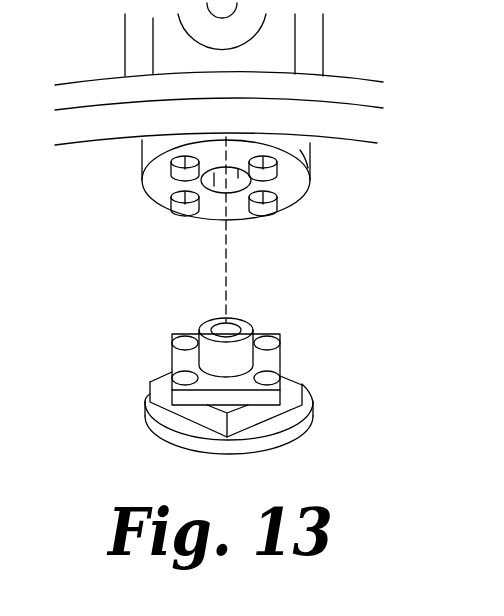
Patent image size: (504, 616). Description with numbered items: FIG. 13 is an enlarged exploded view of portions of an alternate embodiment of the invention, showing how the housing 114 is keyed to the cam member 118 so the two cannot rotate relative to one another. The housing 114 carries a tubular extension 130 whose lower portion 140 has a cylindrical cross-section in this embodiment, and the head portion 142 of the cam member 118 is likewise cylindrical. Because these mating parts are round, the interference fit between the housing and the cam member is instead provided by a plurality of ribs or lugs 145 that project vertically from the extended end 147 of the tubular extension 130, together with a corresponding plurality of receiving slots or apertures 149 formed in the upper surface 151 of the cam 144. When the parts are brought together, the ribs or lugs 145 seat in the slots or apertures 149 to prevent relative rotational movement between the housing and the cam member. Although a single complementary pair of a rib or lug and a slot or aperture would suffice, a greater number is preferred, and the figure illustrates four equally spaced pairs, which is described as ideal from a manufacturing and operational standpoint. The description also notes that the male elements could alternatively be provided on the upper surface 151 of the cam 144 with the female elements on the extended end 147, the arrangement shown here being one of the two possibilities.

The housing 114 is at (357, 92).
The tubular extension 130 is at (290, 186).
The lower portion 140 is at (226, 173).
The extended end 147 is at (298, 167).
The ribs or lugs 145 is at (180, 177).
The head portion 142 is at (205, 322).
The upper surface 151 is at (180, 364).
The receiving slots or apertures 149 is at (172, 336).
The cam 144 is at (290, 398).
The cam member 118 is at (170, 440).